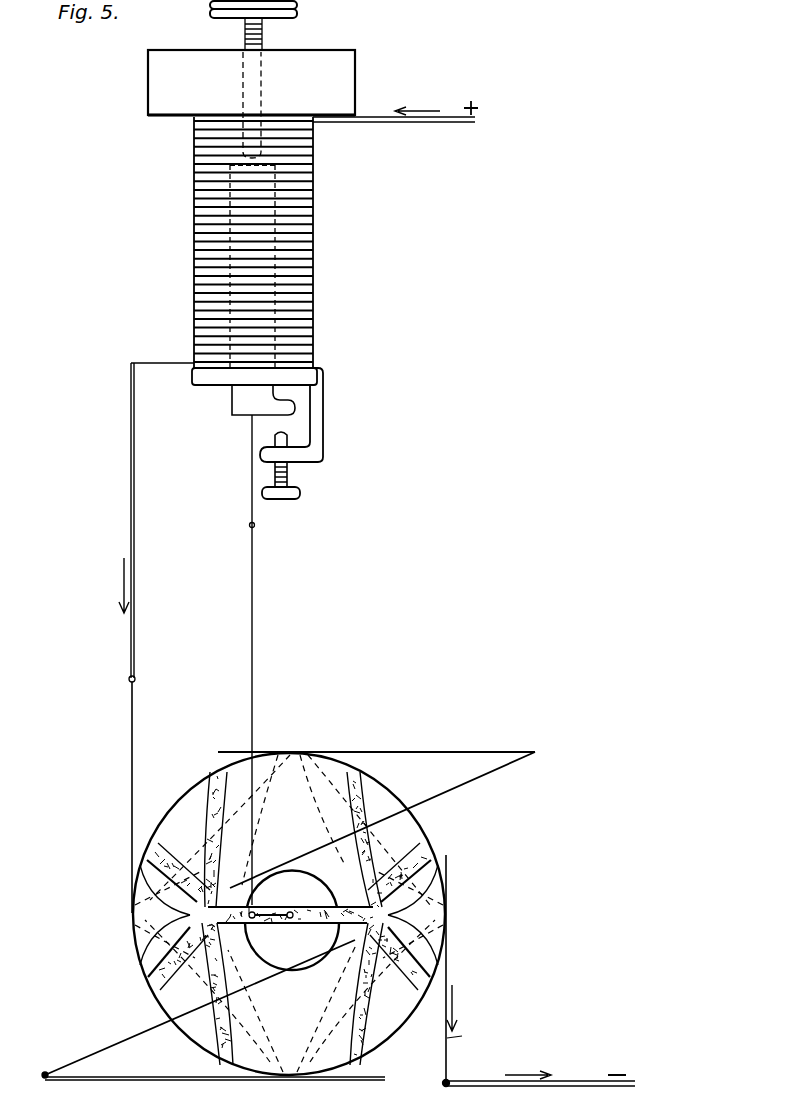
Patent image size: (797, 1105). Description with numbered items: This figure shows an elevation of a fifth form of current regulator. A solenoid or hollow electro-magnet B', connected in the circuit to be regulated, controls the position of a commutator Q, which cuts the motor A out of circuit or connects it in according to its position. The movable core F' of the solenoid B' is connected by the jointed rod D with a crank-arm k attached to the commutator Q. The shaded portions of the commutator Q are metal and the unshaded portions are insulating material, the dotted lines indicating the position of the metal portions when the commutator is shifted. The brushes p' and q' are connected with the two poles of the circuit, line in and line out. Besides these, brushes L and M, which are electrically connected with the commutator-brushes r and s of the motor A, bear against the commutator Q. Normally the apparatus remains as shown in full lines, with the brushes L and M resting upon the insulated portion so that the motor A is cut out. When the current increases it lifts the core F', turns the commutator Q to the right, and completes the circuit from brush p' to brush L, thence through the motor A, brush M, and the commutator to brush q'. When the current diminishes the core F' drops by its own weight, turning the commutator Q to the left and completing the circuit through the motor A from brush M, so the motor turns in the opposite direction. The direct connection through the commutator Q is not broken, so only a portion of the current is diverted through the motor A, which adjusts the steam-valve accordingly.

The solenoid B' is at (267, 251).
The movable core F' is at (263, 400).
The jointed rod D is at (254, 660).
The brush L is at (376, 743).
The commutator-brush of the motor r is at (382, 820).
The commutator-brush of the motor s is at (198, 1009).
The brush M is at (215, 1089).
The brush p' is at (156, 638).
The brush q' is at (539, 971).
The commutator Q is at (289, 914).
The motor A is at (292, 920).
The crank-arm k is at (268, 912).